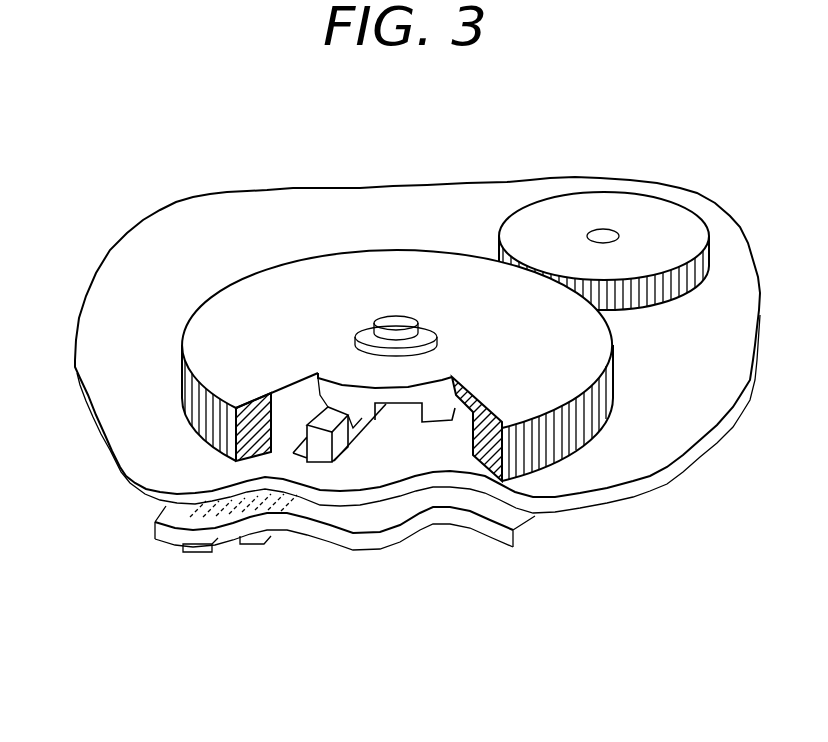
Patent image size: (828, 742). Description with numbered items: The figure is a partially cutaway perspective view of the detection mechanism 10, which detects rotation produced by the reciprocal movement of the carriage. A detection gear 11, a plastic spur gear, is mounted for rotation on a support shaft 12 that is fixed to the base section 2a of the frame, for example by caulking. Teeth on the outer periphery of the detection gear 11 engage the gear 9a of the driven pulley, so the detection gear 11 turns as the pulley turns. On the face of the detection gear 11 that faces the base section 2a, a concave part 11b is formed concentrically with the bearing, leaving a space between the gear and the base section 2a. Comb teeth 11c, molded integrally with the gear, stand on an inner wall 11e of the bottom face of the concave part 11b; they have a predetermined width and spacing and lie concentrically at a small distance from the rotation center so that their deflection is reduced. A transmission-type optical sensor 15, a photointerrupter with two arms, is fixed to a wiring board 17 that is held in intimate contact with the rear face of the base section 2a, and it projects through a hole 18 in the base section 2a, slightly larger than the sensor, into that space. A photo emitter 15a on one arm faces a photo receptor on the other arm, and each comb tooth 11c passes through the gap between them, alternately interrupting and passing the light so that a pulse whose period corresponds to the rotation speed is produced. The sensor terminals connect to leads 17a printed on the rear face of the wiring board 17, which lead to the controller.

The detection mechanism 10 is at (125, 118).
The base section 2a is at (263, 227).
The gear 9a is at (612, 203).
The detection gear 11 is at (347, 273).
The concave part 11b is at (447, 447).
The comb teeth 11c is at (363, 415).
The inner wall 11e is at (288, 388).
The support shaft 12 is at (393, 320).
The optical sensor 15 is at (345, 447).
The photo emitter 15a is at (328, 420).
The wiring board 17 is at (157, 533).
The leads 17a is at (267, 548).
The hole 18 is at (362, 414).